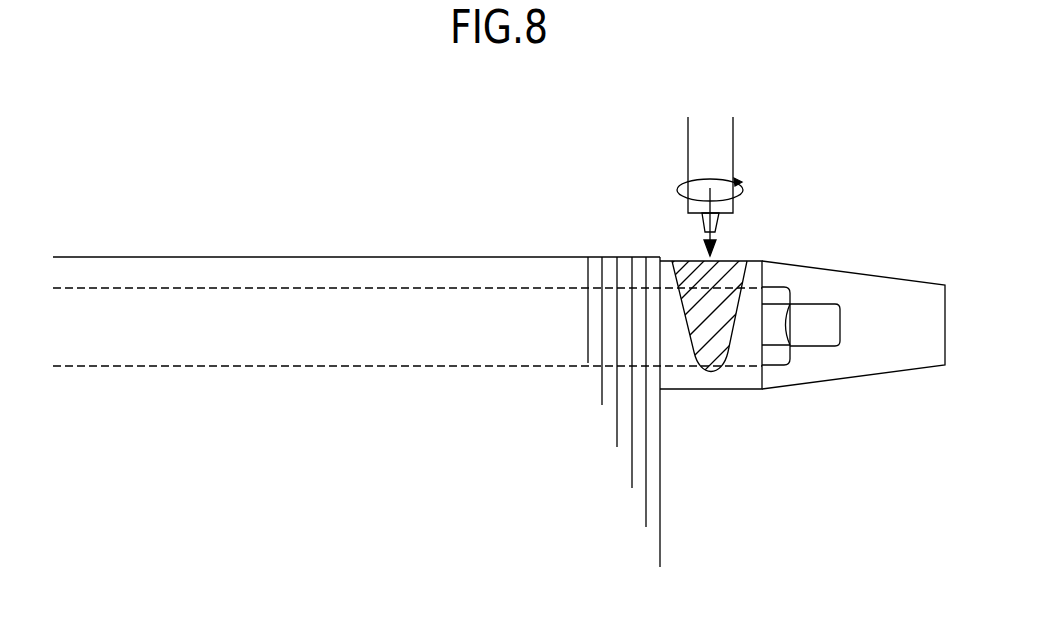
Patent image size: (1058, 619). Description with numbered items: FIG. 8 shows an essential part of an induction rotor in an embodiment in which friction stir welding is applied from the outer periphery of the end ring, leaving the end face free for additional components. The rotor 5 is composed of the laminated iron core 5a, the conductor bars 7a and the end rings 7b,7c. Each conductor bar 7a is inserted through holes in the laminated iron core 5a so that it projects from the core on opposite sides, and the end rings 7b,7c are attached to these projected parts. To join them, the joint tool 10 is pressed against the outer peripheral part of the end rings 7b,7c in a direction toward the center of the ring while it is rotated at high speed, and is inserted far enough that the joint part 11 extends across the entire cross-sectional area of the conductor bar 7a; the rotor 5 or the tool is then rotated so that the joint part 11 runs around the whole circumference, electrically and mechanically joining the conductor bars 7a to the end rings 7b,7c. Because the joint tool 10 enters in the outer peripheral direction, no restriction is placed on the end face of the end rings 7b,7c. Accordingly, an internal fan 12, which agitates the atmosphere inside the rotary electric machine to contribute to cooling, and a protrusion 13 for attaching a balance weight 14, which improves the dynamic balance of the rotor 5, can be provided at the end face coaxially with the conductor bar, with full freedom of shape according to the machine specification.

The rotor 5 is at (362, 257).
The laminated iron core 5a is at (606, 270).
The conductor bar 7a is at (308, 350).
The end rings 7b,7c is at (737, 378).
The joint tool 10 is at (733, 133).
The joint part 11 is at (737, 262).
The internal fan 12 is at (875, 295).
The protrusion 13 is at (832, 328).
The balance weight 14 is at (777, 357).